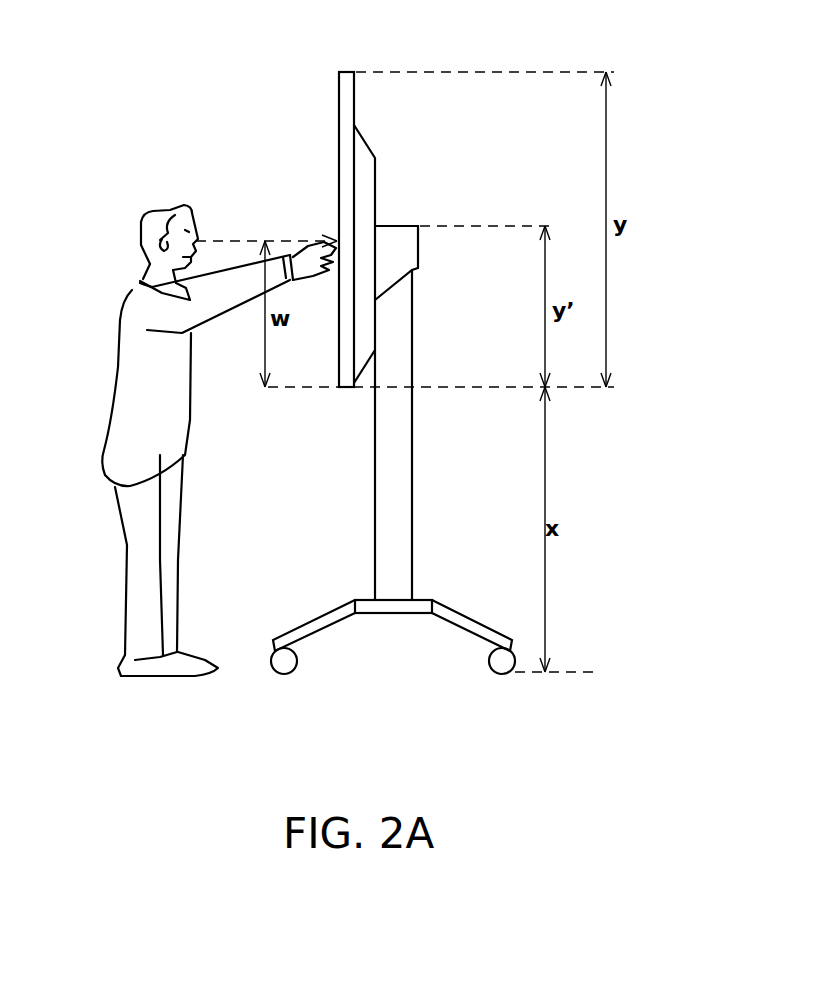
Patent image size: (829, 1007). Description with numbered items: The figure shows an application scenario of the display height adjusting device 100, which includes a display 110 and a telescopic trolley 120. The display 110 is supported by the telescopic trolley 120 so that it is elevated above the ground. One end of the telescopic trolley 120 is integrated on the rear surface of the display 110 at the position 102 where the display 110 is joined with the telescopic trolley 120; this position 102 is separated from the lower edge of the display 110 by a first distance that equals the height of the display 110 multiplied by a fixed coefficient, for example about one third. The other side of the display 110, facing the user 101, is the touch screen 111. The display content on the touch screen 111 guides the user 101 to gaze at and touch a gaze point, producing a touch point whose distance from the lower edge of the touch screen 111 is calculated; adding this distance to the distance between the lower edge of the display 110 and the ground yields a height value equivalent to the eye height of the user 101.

The display height adjusting device 100 is at (436, 48).
The display 110 is at (340, 103).
The touch screen 111 is at (340, 168).
The position where the display is joined with the telescopic trolley 102 is at (379, 221).
The telescopic trolley 120 is at (400, 463).
The user 101 is at (130, 318).